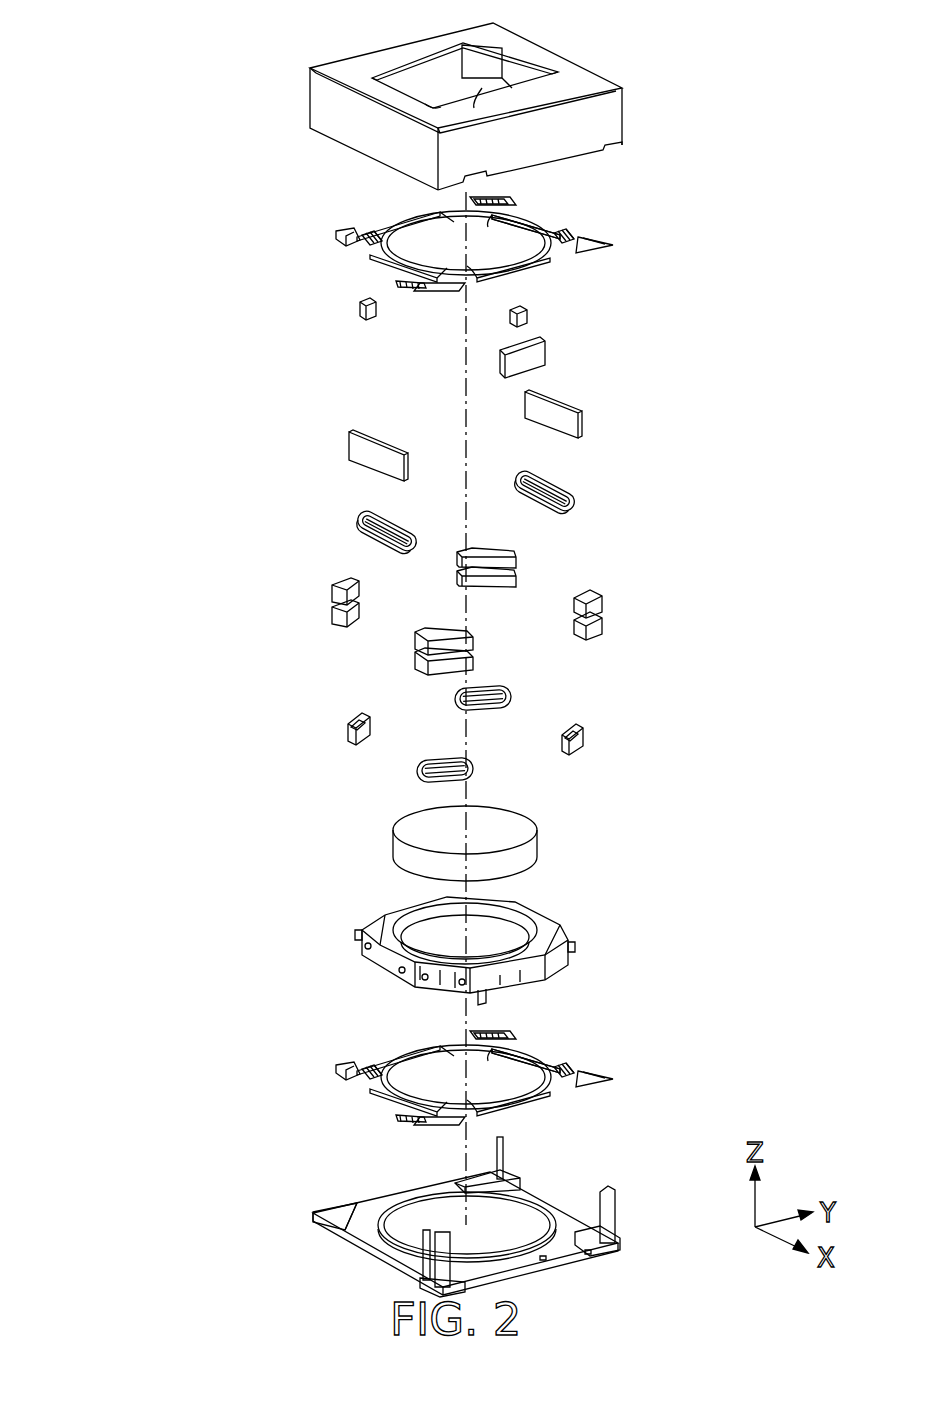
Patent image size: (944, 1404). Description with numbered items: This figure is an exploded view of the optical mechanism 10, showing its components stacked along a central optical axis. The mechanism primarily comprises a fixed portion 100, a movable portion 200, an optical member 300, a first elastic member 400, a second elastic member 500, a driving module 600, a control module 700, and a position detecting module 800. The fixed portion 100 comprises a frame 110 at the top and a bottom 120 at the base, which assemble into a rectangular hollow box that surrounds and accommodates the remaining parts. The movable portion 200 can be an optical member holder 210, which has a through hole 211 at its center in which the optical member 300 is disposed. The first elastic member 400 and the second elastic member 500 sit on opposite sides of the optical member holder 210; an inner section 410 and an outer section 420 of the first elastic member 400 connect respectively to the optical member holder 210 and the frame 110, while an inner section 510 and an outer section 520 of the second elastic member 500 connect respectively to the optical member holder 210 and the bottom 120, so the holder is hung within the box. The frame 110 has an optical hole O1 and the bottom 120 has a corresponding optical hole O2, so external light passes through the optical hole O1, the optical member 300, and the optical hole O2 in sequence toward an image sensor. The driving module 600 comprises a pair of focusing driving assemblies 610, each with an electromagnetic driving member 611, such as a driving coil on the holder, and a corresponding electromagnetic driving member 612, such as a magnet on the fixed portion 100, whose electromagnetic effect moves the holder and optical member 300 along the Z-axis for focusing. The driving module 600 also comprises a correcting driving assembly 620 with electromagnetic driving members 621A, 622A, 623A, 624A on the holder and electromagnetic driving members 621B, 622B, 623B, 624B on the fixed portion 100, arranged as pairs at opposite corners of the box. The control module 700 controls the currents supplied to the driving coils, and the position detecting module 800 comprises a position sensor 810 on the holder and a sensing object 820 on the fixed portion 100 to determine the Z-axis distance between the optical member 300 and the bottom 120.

The optical mechanism 10 is at (250, 12).
The optical hole O1 is at (518, 78).
The frame 110 is at (325, 105).
The bottom 120 is at (337, 1210).
The fixed portion 100 is at (140, 245).
The first elastic member 400 is at (634, 246).
The inner section 410 is at (528, 220).
The outer section 420 is at (346, 233).
The control module 700 is at (367, 298).
The position detecting module 800 is at (657, 312).
The position sensor 810 is at (527, 314).
The sensing object 820 is at (542, 360).
The driving module 600 is at (152, 482).
The focusing driving assembly 610 is at (219, 430).
The electromagnetic driving member 612 is at (349, 450).
The electromagnetic driving member 611 is at (357, 527).
The correcting driving assembly 620 is at (219, 573).
The electromagnetic driving member 621A is at (512, 698).
The electromagnetic driving member 621B is at (516, 562).
The electromagnetic driving member 622A is at (473, 771).
The electromagnetic driving member 622B is at (473, 659).
The electromagnetic driving member 623A is at (583, 731).
The electromagnetic driving member 623B is at (602, 626).
The electromagnetic driving member 624A is at (348, 741).
The electromagnetic driving member 624B is at (330, 600).
The optical member 300 is at (545, 838).
The movable portion 200 is at (486, 936).
The optical member holder 210 is at (378, 962).
The through hole 211 is at (418, 927).
The second elastic member 500 is at (634, 1082).
The inner section 510 is at (528, 1052).
The outer section 520 is at (346, 1068).
The optical hole O2 is at (520, 1223).